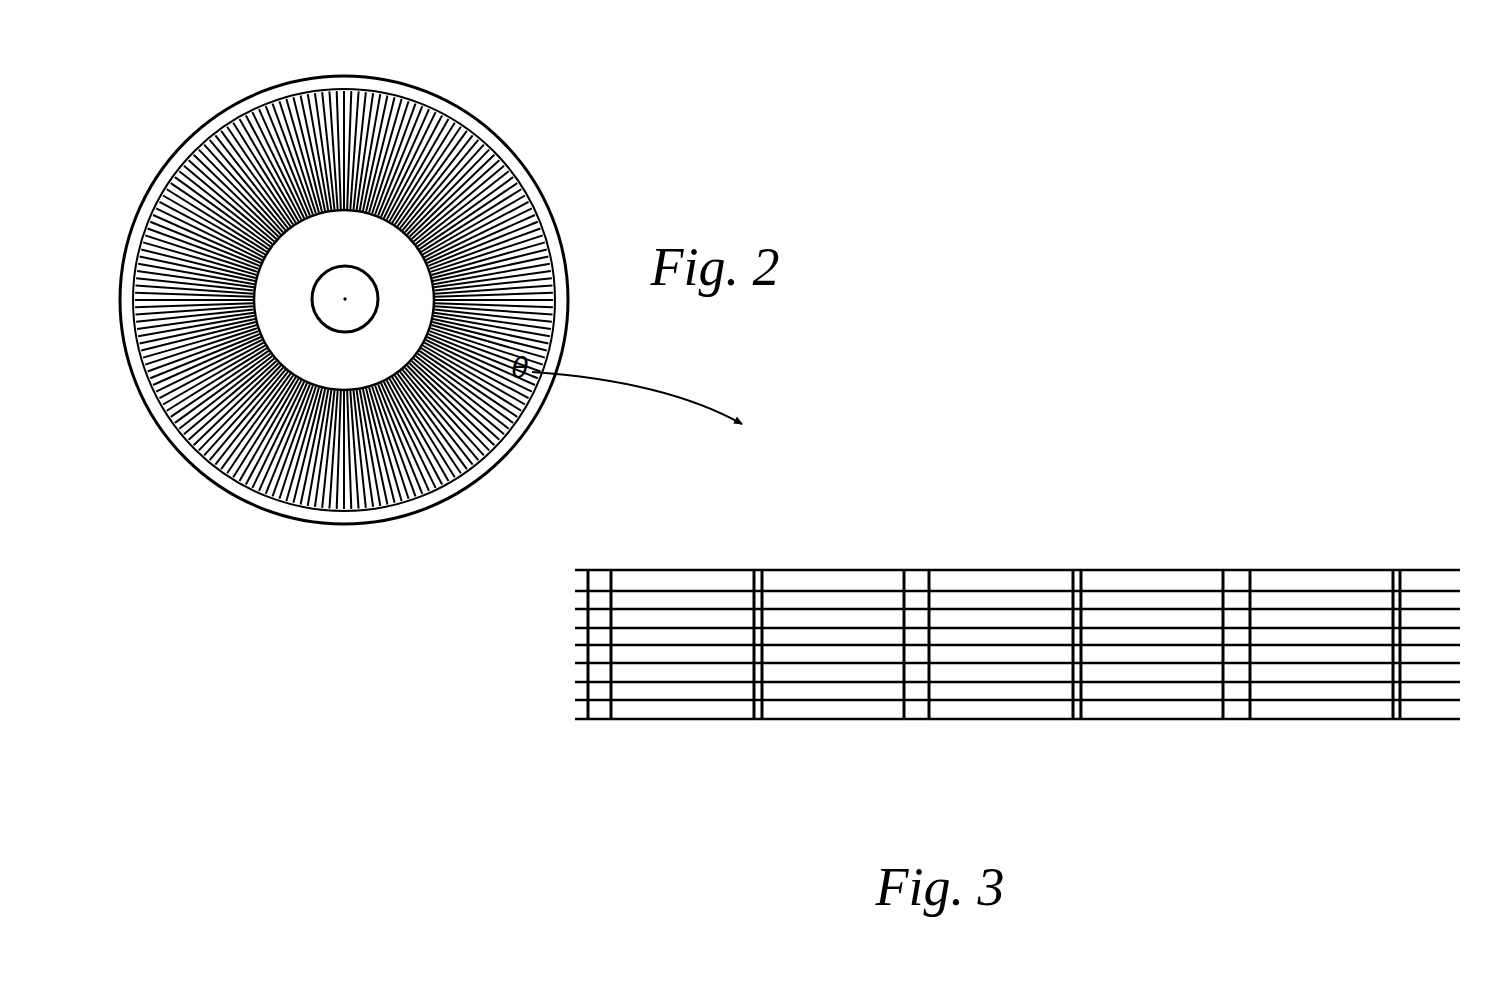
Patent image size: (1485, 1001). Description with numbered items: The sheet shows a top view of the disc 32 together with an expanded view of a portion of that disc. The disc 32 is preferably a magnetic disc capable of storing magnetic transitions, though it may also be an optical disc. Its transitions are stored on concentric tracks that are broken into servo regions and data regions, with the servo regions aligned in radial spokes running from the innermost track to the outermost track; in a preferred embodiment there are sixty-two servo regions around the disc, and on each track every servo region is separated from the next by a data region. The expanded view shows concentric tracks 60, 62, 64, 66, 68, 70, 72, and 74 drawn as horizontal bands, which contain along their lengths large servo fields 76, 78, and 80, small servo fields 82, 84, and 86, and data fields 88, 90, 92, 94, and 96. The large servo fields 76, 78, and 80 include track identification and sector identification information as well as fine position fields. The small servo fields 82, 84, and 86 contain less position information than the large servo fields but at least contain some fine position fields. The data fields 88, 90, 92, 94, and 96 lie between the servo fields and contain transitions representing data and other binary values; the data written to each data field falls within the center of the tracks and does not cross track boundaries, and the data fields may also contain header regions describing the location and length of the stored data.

In FIG. 2, the disc 32 is at (406, 85).
In FIG. 3, the concentric track 60 is at (576, 581).
In FIG. 3, the concentric track 62 is at (576, 599).
In FIG. 3, the concentric track 64 is at (576, 618).
In FIG. 3, the concentric track 66 is at (576, 637).
In FIG. 3, the concentric track 68 is at (576, 655).
In FIG. 3, the concentric track 70 is at (576, 674).
In FIG. 3, the concentric track 72 is at (576, 693).
In FIG. 3, the concentric track 74 is at (576, 713).
In FIG. 3, the large servo field 76 is at (598, 566).
In FIG. 3, the large servo field 78 is at (921, 566).
In FIG. 3, the large servo field 80 is at (1239, 566).
In FIG. 3, the small servo field 82 is at (761, 566).
In FIG. 3, the small servo field 84 is at (1078, 566).
In FIG. 3, the small servo field 86 is at (1398, 566).
In FIG. 3, the data field 88 is at (683, 727).
In FIG. 3, the data field 90 is at (840, 727).
In FIG. 3, the data field 92 is at (1005, 727).
In FIG. 3, the data field 94 is at (1160, 727).
In FIG. 3, the data field 96 is at (1318, 727).